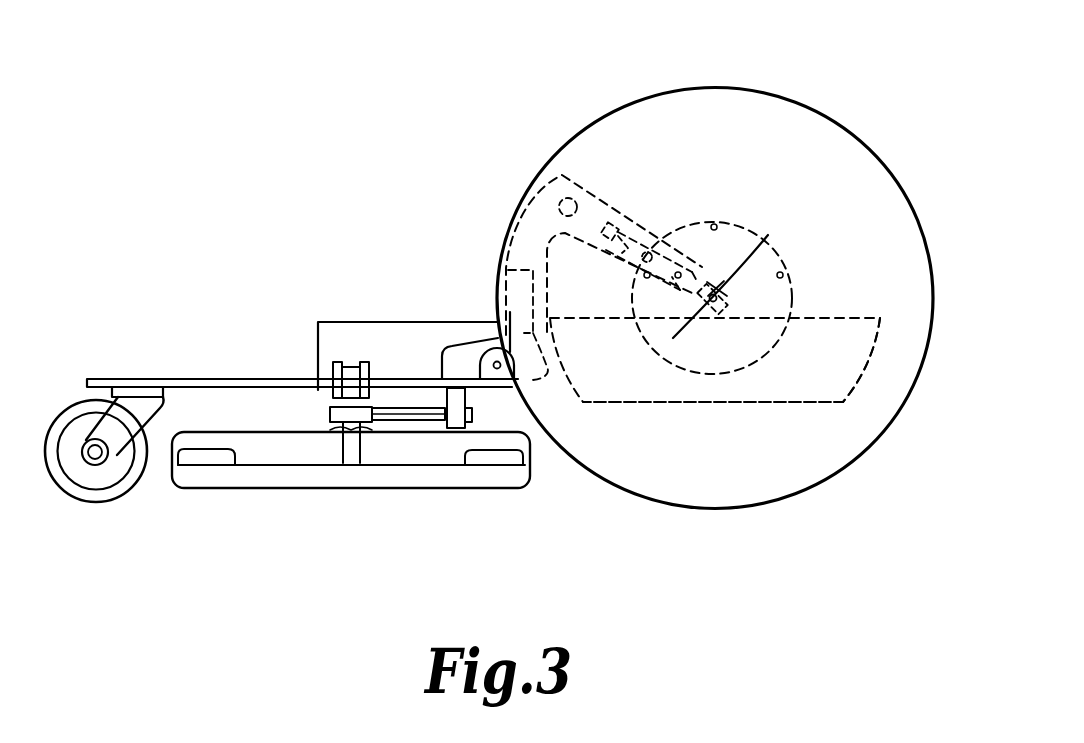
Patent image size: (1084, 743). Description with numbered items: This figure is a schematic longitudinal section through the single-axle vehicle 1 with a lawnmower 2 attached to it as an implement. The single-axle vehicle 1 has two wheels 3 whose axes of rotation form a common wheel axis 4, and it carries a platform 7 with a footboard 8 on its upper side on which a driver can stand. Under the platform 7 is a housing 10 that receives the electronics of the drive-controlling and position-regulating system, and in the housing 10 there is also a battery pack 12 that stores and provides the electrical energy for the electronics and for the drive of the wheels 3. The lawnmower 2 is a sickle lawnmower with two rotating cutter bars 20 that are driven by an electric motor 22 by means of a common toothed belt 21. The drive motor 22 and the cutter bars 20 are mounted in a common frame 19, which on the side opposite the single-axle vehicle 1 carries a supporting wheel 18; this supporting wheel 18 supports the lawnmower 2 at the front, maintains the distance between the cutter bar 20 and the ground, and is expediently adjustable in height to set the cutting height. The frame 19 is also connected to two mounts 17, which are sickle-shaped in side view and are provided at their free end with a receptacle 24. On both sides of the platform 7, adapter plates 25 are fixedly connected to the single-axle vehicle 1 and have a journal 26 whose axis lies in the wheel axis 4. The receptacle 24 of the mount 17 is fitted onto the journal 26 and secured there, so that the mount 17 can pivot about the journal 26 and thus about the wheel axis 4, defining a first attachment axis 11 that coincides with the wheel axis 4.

The single-axle vehicle 1 is at (610, 522).
The lawnmower 2 is at (402, 520).
The wheel 3 is at (590, 130).
The wheel axis 4 is at (741, 270).
The first attachment axis 11 is at (783, 231).
The platform 7 is at (715, 324).
The footboard 8 is at (830, 317).
The housing 10 is at (852, 390).
The battery pack 12 is at (788, 393).
The mount 17 is at (512, 252).
The supporting wheel 18 is at (92, 495).
The frame 19 is at (212, 382).
The cutter bar 20 is at (210, 460).
The toothed belt 21 is at (392, 413).
The electric motor 22 is at (435, 350).
The receptacle 24 is at (690, 321).
The adapter plate 25 is at (725, 224).
The journal 26 is at (720, 305).